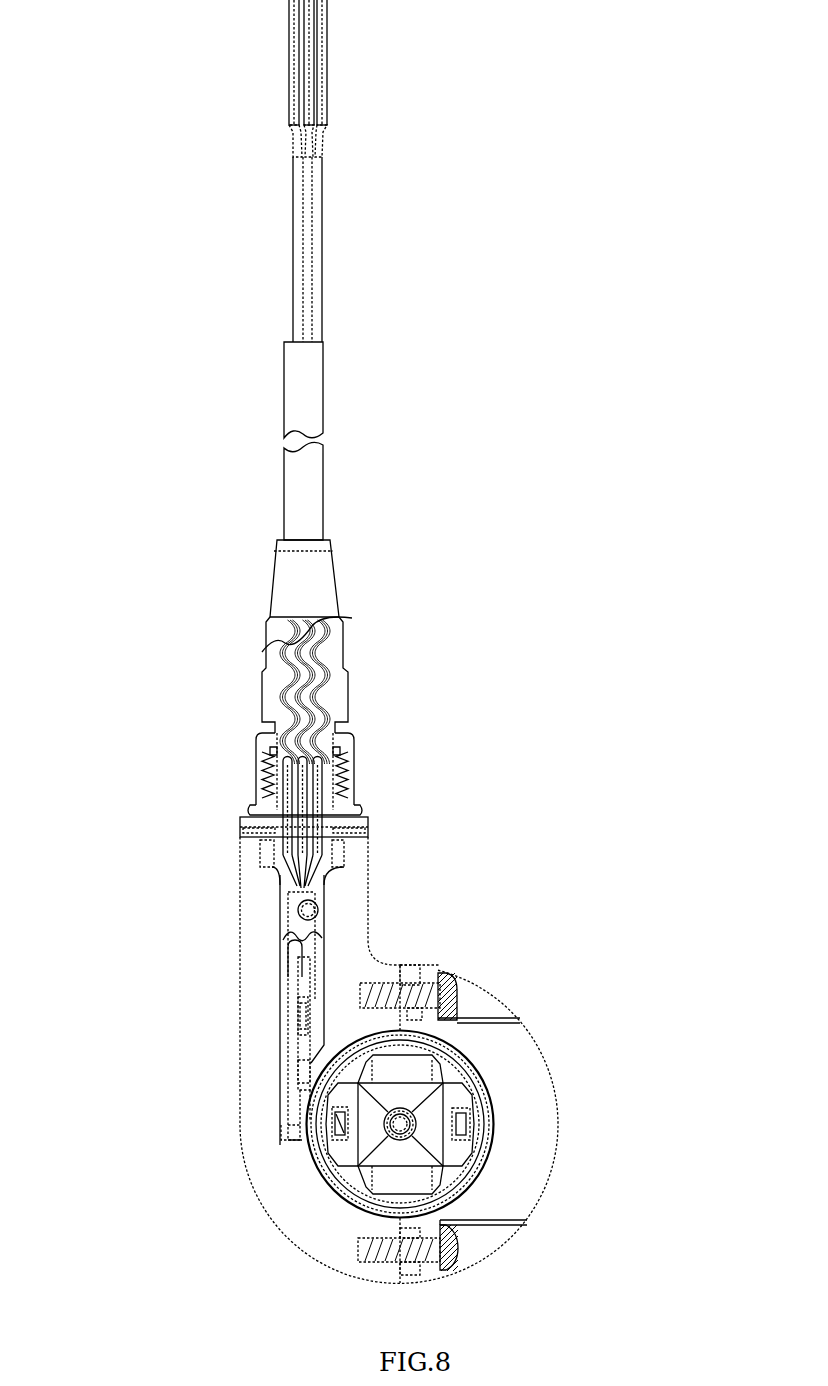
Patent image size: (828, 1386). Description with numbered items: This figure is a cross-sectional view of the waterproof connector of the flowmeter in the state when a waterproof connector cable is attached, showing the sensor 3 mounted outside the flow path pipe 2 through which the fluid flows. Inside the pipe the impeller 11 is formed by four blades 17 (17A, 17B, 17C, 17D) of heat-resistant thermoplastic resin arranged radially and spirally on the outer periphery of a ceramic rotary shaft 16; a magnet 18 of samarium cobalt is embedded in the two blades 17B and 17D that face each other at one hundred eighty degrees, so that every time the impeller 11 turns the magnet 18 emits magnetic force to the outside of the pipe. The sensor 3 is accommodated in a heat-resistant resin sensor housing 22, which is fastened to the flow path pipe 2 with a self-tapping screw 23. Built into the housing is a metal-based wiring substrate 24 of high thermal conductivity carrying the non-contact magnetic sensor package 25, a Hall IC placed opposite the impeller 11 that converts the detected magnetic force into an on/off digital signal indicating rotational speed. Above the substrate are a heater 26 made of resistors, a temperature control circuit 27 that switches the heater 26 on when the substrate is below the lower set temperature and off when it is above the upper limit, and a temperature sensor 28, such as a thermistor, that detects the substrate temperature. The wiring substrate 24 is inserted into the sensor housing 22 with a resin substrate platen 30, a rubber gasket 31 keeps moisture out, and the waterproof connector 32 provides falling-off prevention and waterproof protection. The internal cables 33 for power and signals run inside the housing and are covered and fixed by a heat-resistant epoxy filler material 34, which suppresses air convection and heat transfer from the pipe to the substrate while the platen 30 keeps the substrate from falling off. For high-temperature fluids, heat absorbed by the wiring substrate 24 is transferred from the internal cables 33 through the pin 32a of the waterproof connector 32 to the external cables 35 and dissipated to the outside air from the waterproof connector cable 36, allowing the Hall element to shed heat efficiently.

The flow path pipe 2 is at (478, 1021).
The sensor 3 is at (115, 977).
The impeller 11 is at (358, 1205).
The rotary shaft 16 is at (413, 1125).
The blade 17A is at (420, 1070).
The blade 17B is at (363, 1112).
The blade 17C is at (418, 1162).
The blade 17D is at (445, 1145).
The blades 17 is at (502, 1116).
The magnet 18 is at (462, 1125).
The sensor housing 22 is at (258, 1197).
The self-tapping screw 23 is at (455, 1250).
The metal-based wiring substrate 24 is at (300, 1046).
The magnetic sensor package 25 is at (300, 1125).
The heater 26 is at (303, 1017).
The temperature control circuit 27 is at (298, 1000).
The temperature sensor 28 is at (303, 1075).
The substrate platen 30 is at (345, 880).
The rubber gasket 31 is at (368, 830).
The waterproof connector 32 is at (340, 755).
The pin 32a is at (322, 780).
The internal cables 33 is at (320, 910).
The filler material 34 is at (313, 943).
The external cables 35 is at (320, 668).
The waterproof connector cable 36 is at (261, 736).